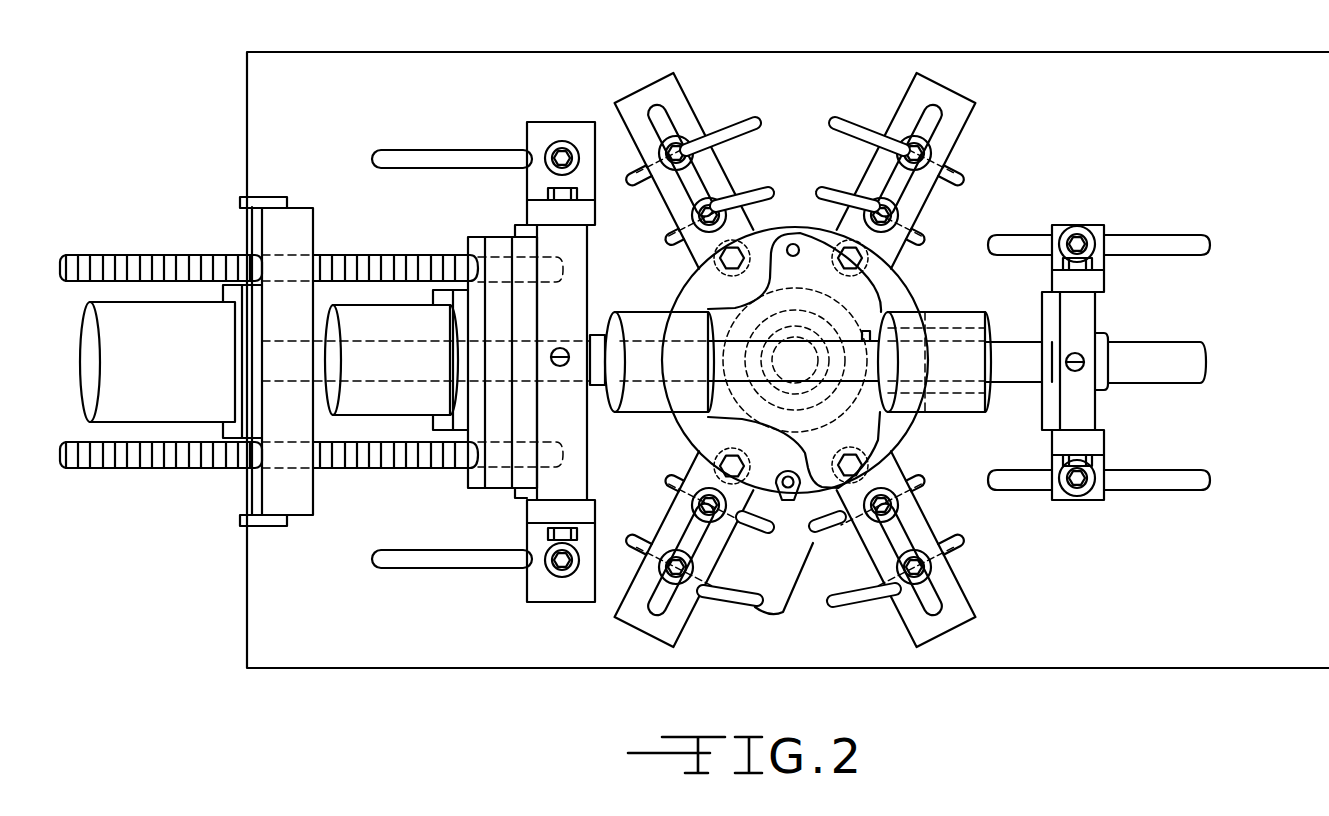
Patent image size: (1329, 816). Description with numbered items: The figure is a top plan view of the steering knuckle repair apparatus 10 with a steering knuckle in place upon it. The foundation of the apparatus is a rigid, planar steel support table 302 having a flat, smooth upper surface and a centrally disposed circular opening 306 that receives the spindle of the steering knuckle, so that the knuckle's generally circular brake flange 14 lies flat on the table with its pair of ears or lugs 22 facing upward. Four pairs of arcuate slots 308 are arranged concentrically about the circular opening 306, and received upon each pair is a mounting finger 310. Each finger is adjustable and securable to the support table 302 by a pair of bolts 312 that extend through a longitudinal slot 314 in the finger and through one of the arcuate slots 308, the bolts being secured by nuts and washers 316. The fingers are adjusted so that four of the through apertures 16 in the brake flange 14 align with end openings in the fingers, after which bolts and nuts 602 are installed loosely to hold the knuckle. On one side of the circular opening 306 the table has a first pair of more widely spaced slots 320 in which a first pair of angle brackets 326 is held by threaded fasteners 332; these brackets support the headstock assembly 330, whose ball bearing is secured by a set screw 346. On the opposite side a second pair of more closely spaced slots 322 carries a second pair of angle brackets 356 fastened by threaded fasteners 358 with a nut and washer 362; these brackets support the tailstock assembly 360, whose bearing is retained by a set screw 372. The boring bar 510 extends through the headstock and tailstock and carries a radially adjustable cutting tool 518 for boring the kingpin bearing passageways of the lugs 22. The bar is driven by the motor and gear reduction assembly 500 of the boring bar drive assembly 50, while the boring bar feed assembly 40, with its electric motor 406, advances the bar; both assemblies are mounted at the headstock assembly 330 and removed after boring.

The steering knuckle repair apparatus 10 is at (1198, 29).
The brake flange 14 is at (822, 286).
The through apertures 16 is at (790, 502).
The ears or lugs 22 is at (631, 401).
The boring bar feed assembly 40 is at (362, 222).
The boring bar drive assembly 50 is at (154, 226).
The support table 302 is at (1163, 637).
The circular opening 306 is at (924, 438).
The arcuate slots 308 is at (795, 385).
The mounting fingers 310 is at (657, 630).
The bolts 312 is at (710, 212).
The longitudinal slot 314 is at (840, 240).
The nuts and washers 316 is at (690, 588).
The first pair of slots 320 is at (420, 158).
The second pair of slots 322 is at (1196, 240).
The first pair of angle brackets 326 is at (540, 216).
The headstock assembly 330 is at (498, 512).
The threaded fasteners 332 is at (556, 158).
The set screw 346 is at (561, 350).
The second pair of angle brackets 356 is at (1106, 223).
The threaded fasteners 358 is at (1070, 240).
The tailstock assembly 360 is at (1082, 412).
The nut and washer 362 is at (1083, 243).
The set screw 372 is at (1076, 355).
The electric motor 406 is at (380, 425).
The motor and gear reduction assembly 500 is at (76, 364).
The boring bar 510 is at (1181, 356).
The cutting tool 518 is at (920, 318).
The bolts and nuts 602 is at (830, 242).